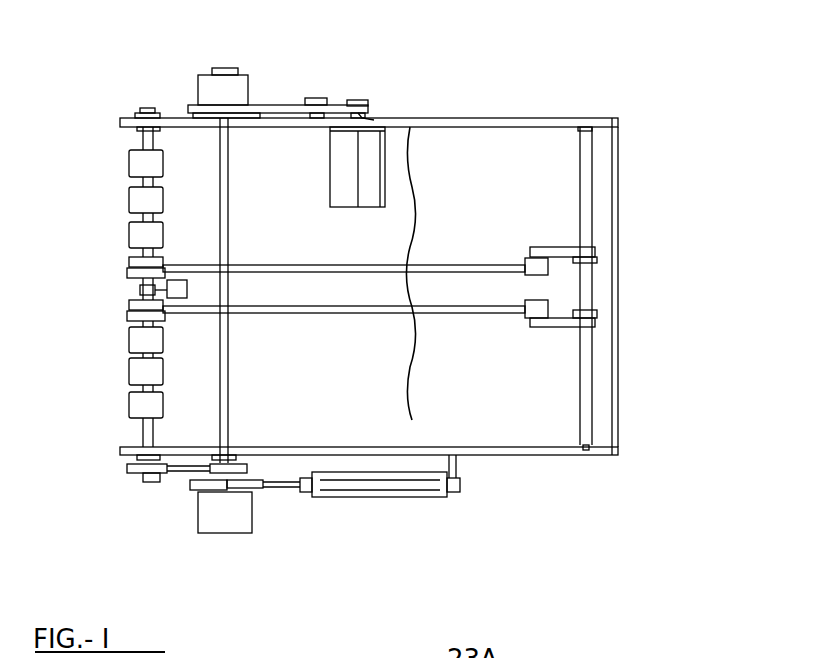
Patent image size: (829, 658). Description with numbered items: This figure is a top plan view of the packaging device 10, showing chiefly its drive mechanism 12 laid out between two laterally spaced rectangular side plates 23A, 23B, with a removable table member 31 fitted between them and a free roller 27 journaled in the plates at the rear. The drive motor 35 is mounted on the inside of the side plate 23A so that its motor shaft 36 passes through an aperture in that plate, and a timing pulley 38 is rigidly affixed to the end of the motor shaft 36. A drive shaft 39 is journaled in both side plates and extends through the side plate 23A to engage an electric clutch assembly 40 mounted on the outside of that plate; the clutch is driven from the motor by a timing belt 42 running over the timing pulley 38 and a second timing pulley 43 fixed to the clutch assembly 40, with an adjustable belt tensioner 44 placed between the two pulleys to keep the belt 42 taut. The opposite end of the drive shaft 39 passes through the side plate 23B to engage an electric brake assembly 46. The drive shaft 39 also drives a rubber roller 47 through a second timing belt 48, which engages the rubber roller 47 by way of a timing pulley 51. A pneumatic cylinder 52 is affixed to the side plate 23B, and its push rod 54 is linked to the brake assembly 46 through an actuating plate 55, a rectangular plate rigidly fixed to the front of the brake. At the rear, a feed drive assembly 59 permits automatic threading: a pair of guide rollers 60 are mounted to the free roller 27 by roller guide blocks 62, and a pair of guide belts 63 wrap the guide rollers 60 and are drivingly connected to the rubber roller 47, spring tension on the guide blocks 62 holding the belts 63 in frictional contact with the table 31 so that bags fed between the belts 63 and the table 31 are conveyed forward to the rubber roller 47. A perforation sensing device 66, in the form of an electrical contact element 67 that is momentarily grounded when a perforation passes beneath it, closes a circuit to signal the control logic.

The packaging device 10 is at (432, 276).
The drive mechanism 12 is at (129, 223).
The side plate 23A is at (548, 118).
The side plate 23B is at (558, 455).
The free roller 27 is at (596, 190).
The table member 31 is at (497, 150).
The drive motor 35 is at (332, 198).
The motor shaft 36 is at (372, 118).
The timing pulley 38 is at (360, 100).
The drive shaft 39 is at (228, 406).
The electric clutch assembly 40 is at (237, 68).
The timing belt 42 is at (338, 103).
The second timing pulley 43 is at (195, 105).
The adjustable belt tensioner 44 is at (322, 98).
The electric brake assembly 46 is at (252, 530).
The rubber roller 47 is at (130, 228).
The second timing belt 48 is at (145, 482).
The timing pulley 51 is at (130, 470).
The pneumatic cylinder 52 is at (410, 497).
The push rod 54 is at (283, 488).
The actuating plate 55 is at (190, 485).
The feed drive assembly 59 is at (581, 324).
The guide rollers 60 is at (528, 258).
The roller guide blocks 62 is at (597, 253).
The guide belts 63 is at (395, 262).
The perforation sensing device 66 is at (177, 298).
The electrical contact element 67 is at (135, 291).